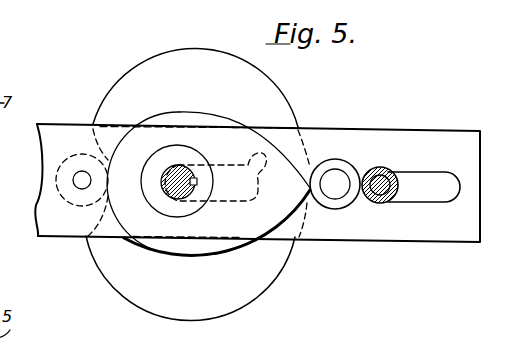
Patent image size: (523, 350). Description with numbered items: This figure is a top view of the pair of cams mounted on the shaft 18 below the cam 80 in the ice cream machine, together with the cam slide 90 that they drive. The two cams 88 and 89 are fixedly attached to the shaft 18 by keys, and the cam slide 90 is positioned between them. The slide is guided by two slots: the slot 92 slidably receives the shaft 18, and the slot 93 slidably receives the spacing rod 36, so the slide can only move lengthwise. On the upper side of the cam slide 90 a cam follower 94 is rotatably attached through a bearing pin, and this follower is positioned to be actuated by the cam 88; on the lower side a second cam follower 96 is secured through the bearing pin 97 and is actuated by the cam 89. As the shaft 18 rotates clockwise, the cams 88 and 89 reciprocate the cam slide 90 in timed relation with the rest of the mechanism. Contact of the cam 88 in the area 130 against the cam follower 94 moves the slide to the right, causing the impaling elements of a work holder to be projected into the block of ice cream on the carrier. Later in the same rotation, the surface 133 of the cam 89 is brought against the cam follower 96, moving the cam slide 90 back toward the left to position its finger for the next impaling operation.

The shaft 18 is at (179, 168).
The spacing rod 36 is at (384, 169).
The cam 80 is at (10, 254).
The cam 88 is at (208, 180).
The cam 89 is at (201, 107).
The cam slide 90 is at (375, 134).
The slot 92 is at (260, 152).
The slot 93 is at (421, 203).
The cam follower 94 is at (324, 164).
The second cam follower 96 is at (68, 153).
The bearing pin 97 is at (73, 181).
The area of cam 88 130 is at (285, 218).
The surface of cam 89 133 is at (115, 292).